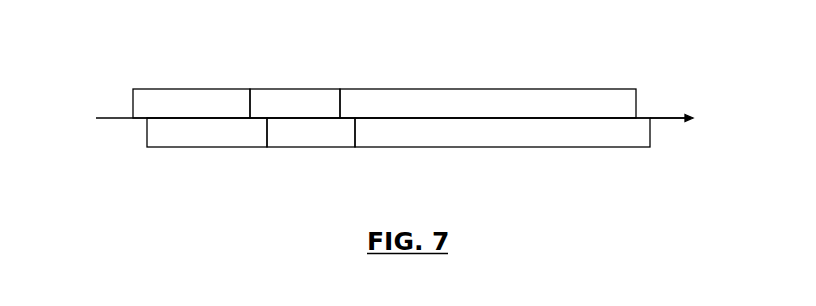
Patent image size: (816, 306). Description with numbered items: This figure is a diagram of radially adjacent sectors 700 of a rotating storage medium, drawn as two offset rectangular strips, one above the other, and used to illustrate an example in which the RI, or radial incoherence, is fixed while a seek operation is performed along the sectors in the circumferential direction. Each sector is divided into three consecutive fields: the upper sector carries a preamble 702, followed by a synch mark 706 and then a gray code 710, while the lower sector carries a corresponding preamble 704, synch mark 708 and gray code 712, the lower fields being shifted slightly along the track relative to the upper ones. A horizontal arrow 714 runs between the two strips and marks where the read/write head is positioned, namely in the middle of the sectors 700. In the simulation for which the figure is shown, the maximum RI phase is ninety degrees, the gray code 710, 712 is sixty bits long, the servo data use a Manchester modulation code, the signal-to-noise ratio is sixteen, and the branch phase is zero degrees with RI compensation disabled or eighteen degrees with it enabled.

The radial adjacent sectors 700 is at (147, 136).
The preamble 702 is at (168, 88).
The preamble 704 is at (185, 148).
The synch mark 706 is at (284, 88).
The synch mark 708 is at (307, 148).
The gray code 710 is at (442, 88).
The gray code 712 is at (467, 148).
The arrow 714 is at (657, 118).